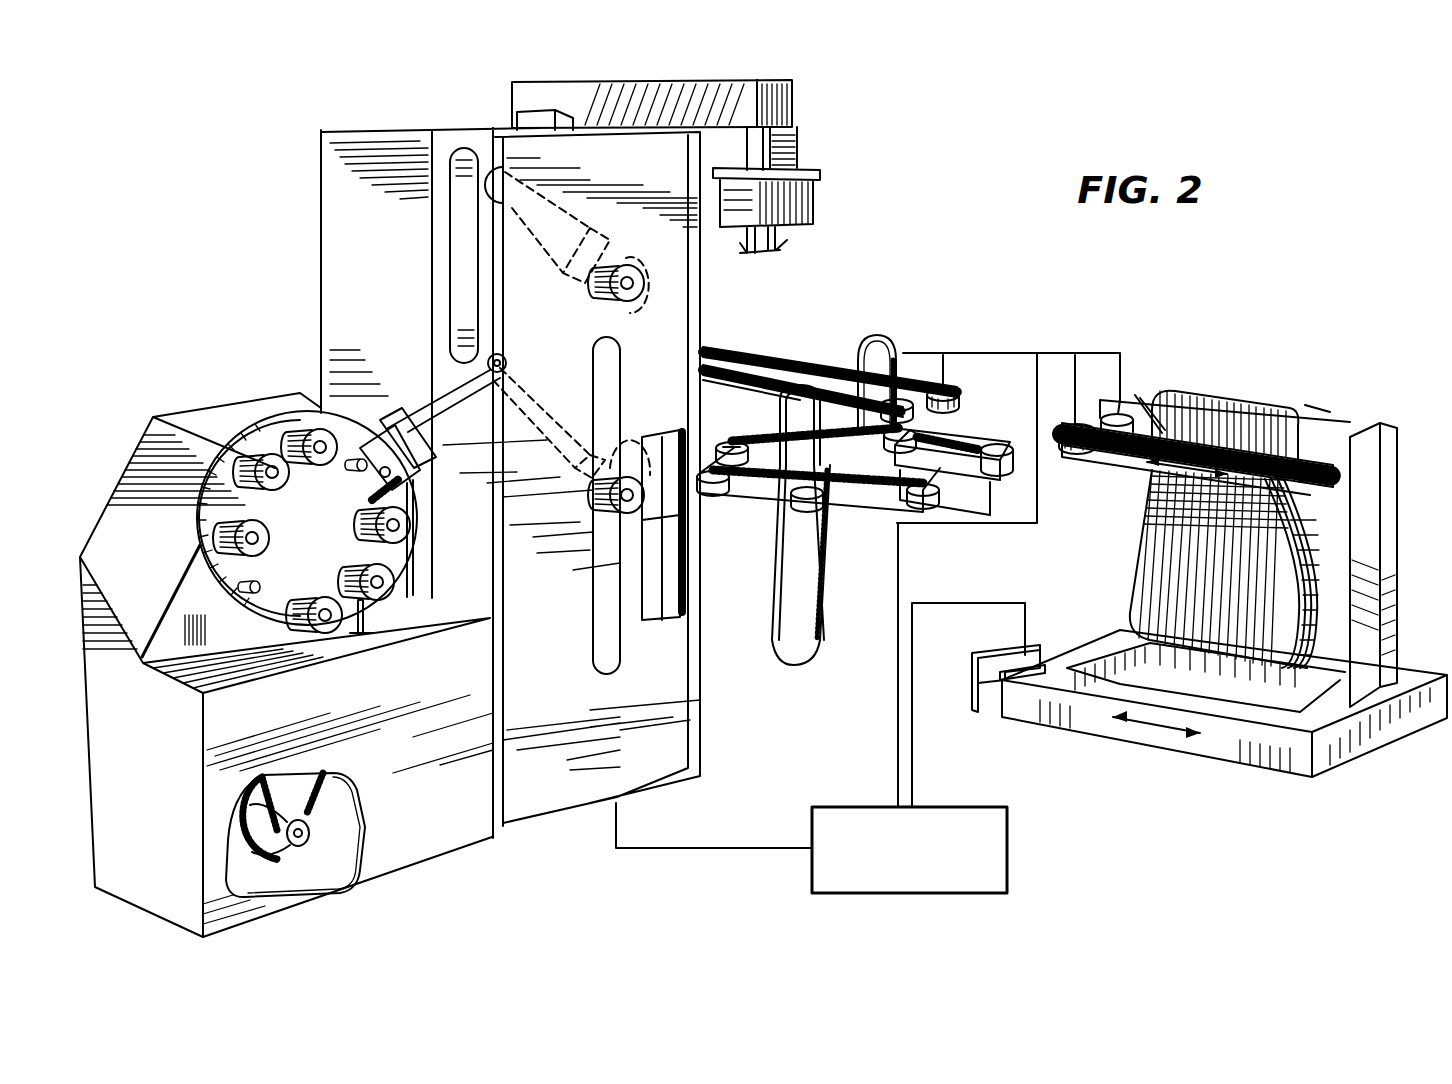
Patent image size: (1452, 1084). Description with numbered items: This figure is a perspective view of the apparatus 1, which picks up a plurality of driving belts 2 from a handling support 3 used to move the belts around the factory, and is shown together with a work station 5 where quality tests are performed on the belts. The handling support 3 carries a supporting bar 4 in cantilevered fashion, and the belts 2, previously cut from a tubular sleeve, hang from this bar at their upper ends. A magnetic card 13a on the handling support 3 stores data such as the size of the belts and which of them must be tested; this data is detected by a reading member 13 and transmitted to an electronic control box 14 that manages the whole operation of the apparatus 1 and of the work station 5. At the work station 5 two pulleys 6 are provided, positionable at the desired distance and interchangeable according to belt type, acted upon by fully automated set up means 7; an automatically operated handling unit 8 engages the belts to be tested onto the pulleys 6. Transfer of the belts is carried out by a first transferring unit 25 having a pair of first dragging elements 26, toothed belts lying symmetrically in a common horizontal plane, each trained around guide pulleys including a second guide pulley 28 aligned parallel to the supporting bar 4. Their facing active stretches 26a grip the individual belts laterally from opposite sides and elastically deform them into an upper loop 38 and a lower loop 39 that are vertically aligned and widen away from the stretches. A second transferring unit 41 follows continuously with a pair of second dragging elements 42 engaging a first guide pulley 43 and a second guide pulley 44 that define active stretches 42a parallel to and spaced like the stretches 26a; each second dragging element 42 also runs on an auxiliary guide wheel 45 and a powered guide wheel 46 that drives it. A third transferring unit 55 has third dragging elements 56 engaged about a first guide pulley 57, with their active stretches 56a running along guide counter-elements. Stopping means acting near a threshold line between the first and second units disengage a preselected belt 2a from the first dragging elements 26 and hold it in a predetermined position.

The apparatus 1 is at (1118, 272).
The driving belts 2 is at (876, 336).
The preselected belt 2a is at (768, 617).
The handling support 3 is at (1385, 470).
The supporting bar 4 is at (1326, 425).
The work station 5 is at (836, 202).
The pulleys 6 is at (631, 272).
The set up means 7 is at (400, 395).
The handling unit 8 is at (820, 152).
The reading member 13 is at (1000, 650).
The magnetic card 13a is at (1040, 670).
The electronic control box 14 is at (840, 805).
The first transferring unit 25 is at (1056, 398).
The first dragging elements 26 is at (1140, 400).
The active stretches 26a is at (1162, 420).
The second guide pulley 28 is at (1069, 454).
The upper loop 38 is at (1295, 405).
The lower loop 39 is at (1312, 620).
The second transferring unit 41 is at (982, 405).
The second dragging elements 42 is at (998, 445).
The active stretches 42a is at (845, 510).
The first guide pulley 43 is at (930, 508).
The second guide pulley 44 is at (729, 446).
The auxiliary guide wheel 45 is at (918, 440).
The powered guide wheel 46 is at (785, 505).
The third transferring unit 55 is at (787, 350).
The third dragging elements 56 is at (814, 368).
The active stretches 56a is at (757, 360).
The first guide pulley 57 is at (926, 352).